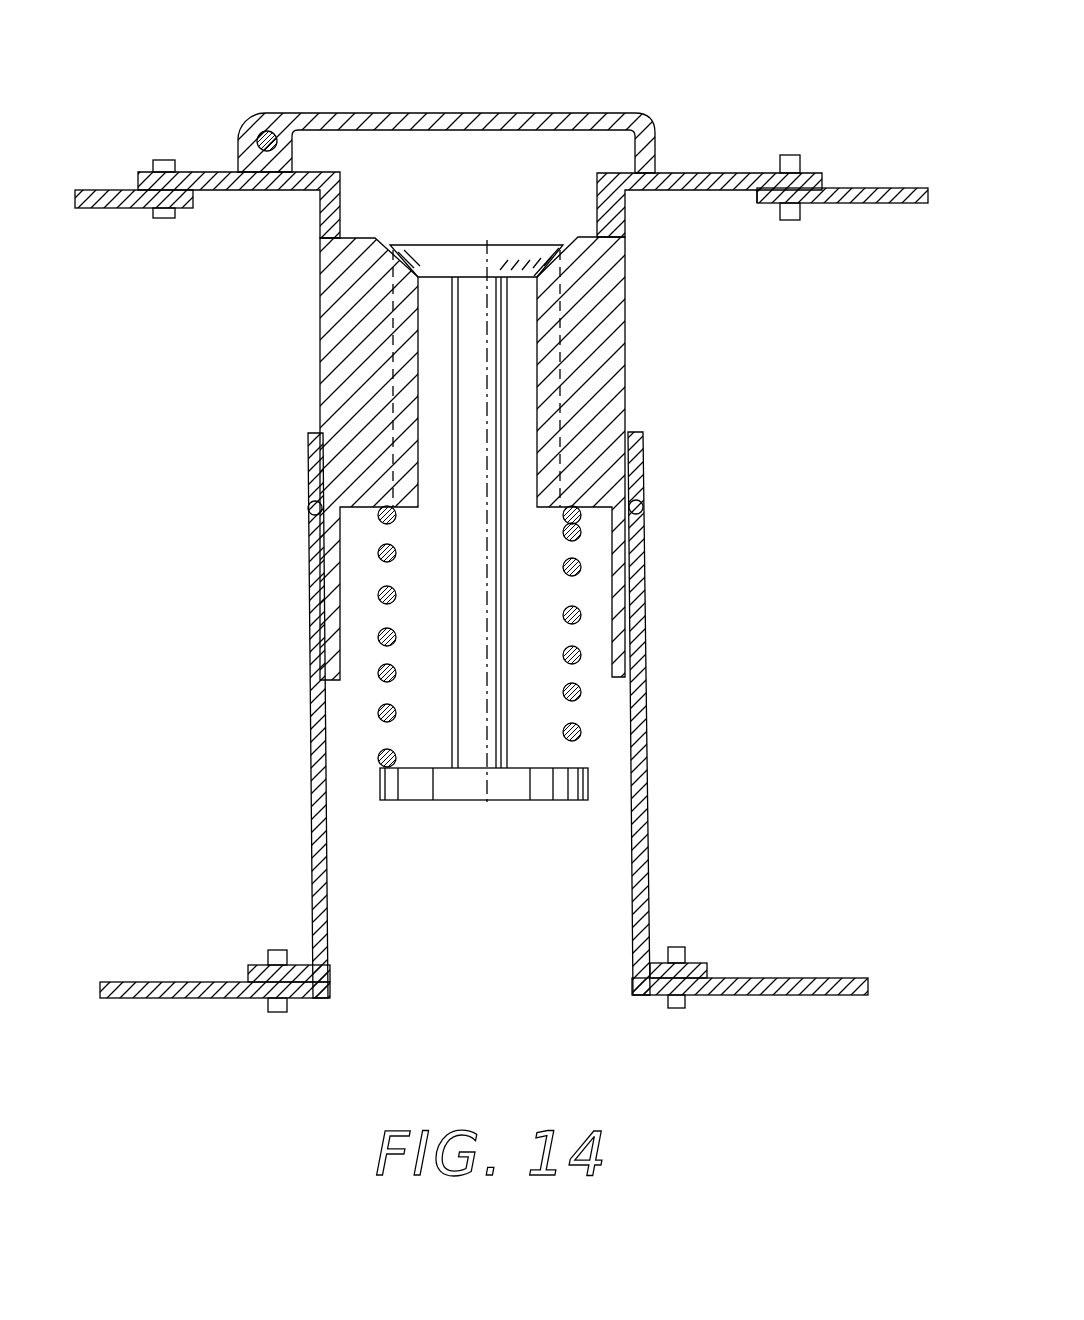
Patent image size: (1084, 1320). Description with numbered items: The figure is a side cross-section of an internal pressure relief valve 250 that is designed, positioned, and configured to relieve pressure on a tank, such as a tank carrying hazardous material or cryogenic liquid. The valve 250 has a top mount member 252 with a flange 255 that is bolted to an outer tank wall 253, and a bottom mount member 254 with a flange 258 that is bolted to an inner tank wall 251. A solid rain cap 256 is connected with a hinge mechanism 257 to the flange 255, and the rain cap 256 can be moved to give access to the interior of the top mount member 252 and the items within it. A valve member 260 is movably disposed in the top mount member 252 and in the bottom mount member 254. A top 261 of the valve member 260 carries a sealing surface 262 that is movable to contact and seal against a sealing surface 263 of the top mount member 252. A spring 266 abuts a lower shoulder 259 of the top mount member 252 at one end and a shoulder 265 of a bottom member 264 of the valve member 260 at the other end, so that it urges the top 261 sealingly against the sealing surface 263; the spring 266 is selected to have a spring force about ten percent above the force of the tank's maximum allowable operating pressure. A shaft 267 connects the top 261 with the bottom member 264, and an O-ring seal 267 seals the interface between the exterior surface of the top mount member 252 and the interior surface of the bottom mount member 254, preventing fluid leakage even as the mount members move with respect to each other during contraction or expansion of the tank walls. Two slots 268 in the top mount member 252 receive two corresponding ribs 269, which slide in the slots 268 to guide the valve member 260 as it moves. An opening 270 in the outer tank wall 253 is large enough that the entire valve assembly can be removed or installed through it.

The internal pressure relief valve 250 is at (588, 399).
The inner tank wall 251 is at (835, 978).
The top mount member 252 is at (330, 287).
The outer tank wall 253 is at (875, 188).
The bottom mount member 254 is at (640, 757).
The flange 255 is at (693, 173).
The rain cap 256 is at (485, 112).
The hinge pin 257 is at (262, 132).
The flange 258 is at (700, 964).
The lower shoulder 259 is at (320, 532).
The valve member 260 is at (482, 585).
The top 261 is at (487, 245).
The sealing surface 262 is at (418, 247).
The sealing surface 263 is at (563, 250).
The bottom member 264 is at (412, 800).
The shoulder 265 is at (410, 766).
The spring 266 is at (583, 690).
The O-ring seal 267 is at (465, 387).
The slots 268 is at (563, 337).
The ribs 269 is at (393, 345).
The opening 270 is at (757, 192).